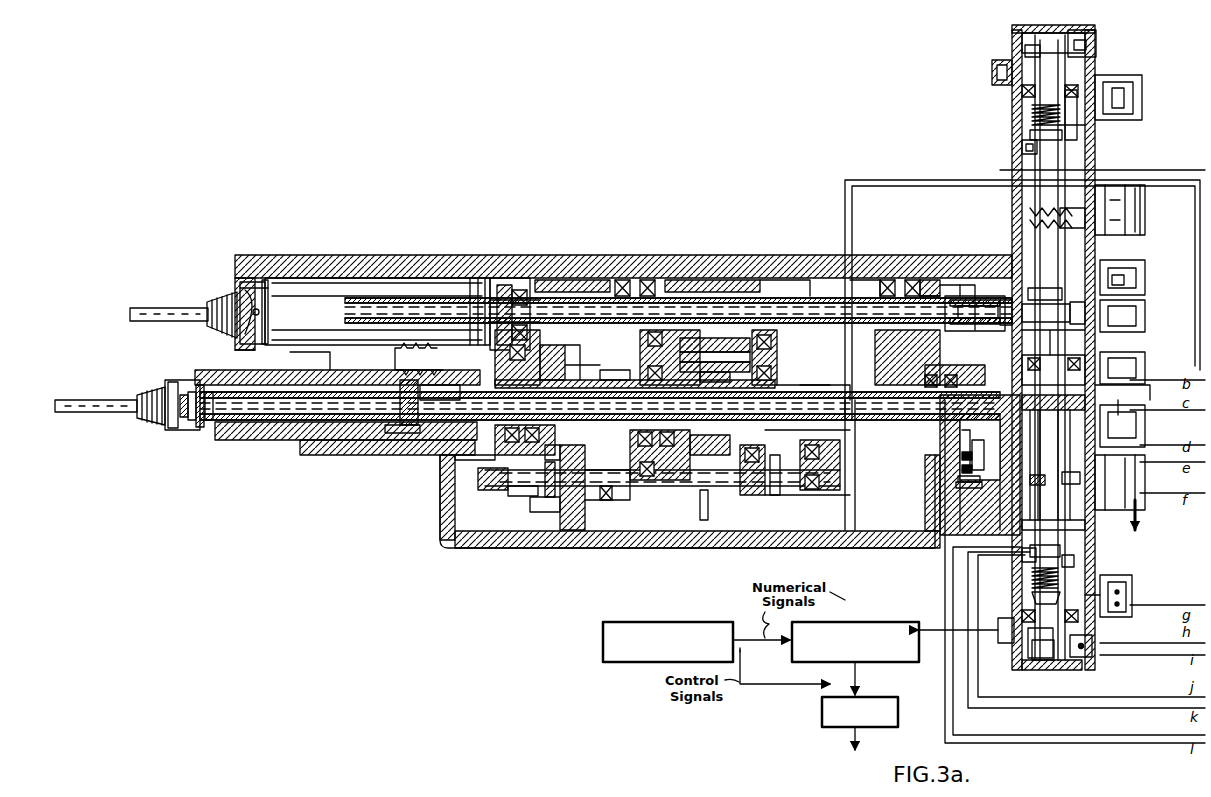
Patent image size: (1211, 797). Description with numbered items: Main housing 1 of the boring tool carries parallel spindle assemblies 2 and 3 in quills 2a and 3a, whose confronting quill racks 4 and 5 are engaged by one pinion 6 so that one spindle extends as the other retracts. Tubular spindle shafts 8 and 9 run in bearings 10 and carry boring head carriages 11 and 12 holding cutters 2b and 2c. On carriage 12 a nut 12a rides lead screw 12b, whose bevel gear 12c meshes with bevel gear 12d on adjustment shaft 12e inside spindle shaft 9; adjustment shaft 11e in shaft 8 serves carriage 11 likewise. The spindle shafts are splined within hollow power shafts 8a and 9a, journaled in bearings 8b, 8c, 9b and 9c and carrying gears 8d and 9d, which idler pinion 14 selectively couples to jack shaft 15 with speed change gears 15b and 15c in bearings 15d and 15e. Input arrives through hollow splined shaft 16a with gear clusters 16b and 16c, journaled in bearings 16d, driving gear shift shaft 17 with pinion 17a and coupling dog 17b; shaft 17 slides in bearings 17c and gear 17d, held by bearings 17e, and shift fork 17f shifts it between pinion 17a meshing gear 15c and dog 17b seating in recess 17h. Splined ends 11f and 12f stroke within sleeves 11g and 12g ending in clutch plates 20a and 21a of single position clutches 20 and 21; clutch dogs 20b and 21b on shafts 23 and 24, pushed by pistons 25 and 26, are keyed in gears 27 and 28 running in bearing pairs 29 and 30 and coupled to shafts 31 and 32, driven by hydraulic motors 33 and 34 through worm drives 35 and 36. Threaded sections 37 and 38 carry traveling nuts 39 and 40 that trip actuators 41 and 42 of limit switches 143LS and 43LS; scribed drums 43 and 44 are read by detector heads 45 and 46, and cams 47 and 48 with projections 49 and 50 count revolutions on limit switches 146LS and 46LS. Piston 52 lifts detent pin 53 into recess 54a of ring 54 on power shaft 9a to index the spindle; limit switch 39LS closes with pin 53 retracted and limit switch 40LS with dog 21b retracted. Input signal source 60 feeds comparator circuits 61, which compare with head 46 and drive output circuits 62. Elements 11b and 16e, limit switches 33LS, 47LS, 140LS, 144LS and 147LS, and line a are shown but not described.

The main housing 1 is at (616, 256).
The spindle assembly 2 is at (193, 299).
The quill 2a is at (335, 296).
The cutter 2b is at (150, 308).
The cutter 2c is at (74, 396).
The spindle assembly 3 is at (299, 405).
The quill 3a is at (275, 440).
The quill rack 4 is at (448, 336).
The quill rack 5 is at (315, 361).
The pinion 6 is at (417, 356).
The tubular spindle shaft 8 is at (484, 335).
The power shaft 8a is at (561, 294).
The bearing 8b is at (498, 278).
The bearing 8c is at (887, 280).
The gear 8d is at (672, 286).
The tubular spindle shaft 9 is at (472, 388).
The power shaft 9a is at (787, 390).
The bearing 9b is at (761, 372).
The bearing 9c is at (925, 376).
The gear 9d is at (722, 434).
The bearings 10 is at (216, 373).
The boring head carriage 11 is at (211, 292).
The chuck jaw 11b is at (262, 300).
The adjustment shaft 11e is at (597, 300).
The splined section 11f is at (818, 300).
The internally splined sleeve 11g is at (927, 277).
The boring head carriage 12 is at (142, 394).
The nut 12a is at (182, 428).
The lead screw 12b is at (190, 426).
The bevel gear 12c is at (170, 379).
The bevel gear 12d is at (205, 428).
The adjustment shaft 12e is at (238, 415).
The splined section 12f is at (824, 395).
The internally splined sleeve 12g is at (872, 400).
The idler pinion 14 is at (745, 339).
The jack shaft 15 is at (584, 376).
The speed change gear 15b is at (612, 370).
The speed change gear 15c is at (585, 340).
The bearing 15d is at (490, 366).
The bearing 15e is at (660, 455).
The hollow internally splined shaft 16a is at (816, 468).
The gear cluster 16b is at (790, 436).
The gear cluster 16c is at (740, 455).
The bearings 16d is at (816, 490).
The gear 16e is at (600, 434).
The gear shift shaft 17 is at (492, 469).
The pinion 17a is at (551, 492).
The coupling dog 17b is at (560, 496).
The bearings 17c is at (510, 493).
The gear 17d is at (610, 492).
The bearings 17e is at (628, 502).
The shift fork 17f is at (560, 511).
The recess 17h is at (558, 448).
The single position clutch 20 is at (958, 333).
The single position clutch plate 20a is at (951, 284).
The clutch dog 20b is at (972, 288).
The single position clutch 21 is at (980, 465).
The single position clutch plate 21a is at (975, 445).
The clutch dog 21b is at (1002, 370).
The shaft 23 is at (978, 298).
The shaft 24 is at (1032, 465).
The piston 25 is at (1066, 288).
The piston 26 is at (1078, 415).
The gear 27 is at (1042, 304).
The gear 28 is at (1046, 430).
The bearing pair 29 is at (1007, 300).
The bearing pair 30 is at (1075, 375).
The shaft 31 is at (1050, 234).
The shaft 32 is at (1050, 505).
The hydraulic motor 33 is at (1140, 211).
The hydraulic motor 34 is at (1138, 494).
The worm drive 35 is at (1055, 210).
The worm drive 36 is at (1050, 478).
The threaded section 37 is at (1032, 110).
The threaded section 38 is at (1032, 590).
The traveling nut 39 is at (1030, 128).
The traveling nut 40 is at (1060, 565).
The limit switch actuator 41 is at (1080, 128).
The limit switch actuator 42 is at (1074, 565).
The drum 43 is at (1022, 90).
The drum 44 is at (1030, 640).
The detector head 45 is at (997, 70).
The detector head 46 is at (999, 628).
The circular cam 47 is at (1025, 42).
The circular cam 48 is at (1025, 655).
The projection 49 is at (1080, 33).
The projection 50 is at (1062, 670).
The piston 52 is at (955, 488).
The detent pin 53 is at (955, 474).
The ring 54 is at (930, 359).
The recess 54a is at (984, 455).
The input signal source 60 is at (720, 622).
The comparator circuit 61 is at (878, 620).
The output circuits 62 is at (820, 712).
The limit switch 33LS is at (961, 468).
The limit switch 39LS is at (960, 450).
The limit switch 40LS is at (1130, 368).
The limit switch 43LS is at (1125, 572).
The limit switch 46LS is at (1085, 660).
The limit switch 47LS is at (1022, 560).
The limit switch 140LS is at (1134, 283).
The limit switch 143LS is at (1122, 93).
The limit switch 144LS is at (1125, 323).
The limit switch 146LS is at (1086, 45).
The limit switch 147LS is at (1022, 149).
The control line a is at (1102, 161).